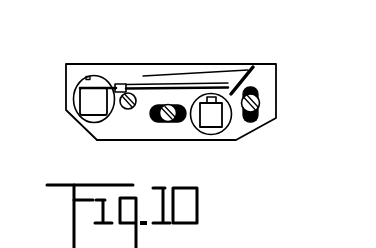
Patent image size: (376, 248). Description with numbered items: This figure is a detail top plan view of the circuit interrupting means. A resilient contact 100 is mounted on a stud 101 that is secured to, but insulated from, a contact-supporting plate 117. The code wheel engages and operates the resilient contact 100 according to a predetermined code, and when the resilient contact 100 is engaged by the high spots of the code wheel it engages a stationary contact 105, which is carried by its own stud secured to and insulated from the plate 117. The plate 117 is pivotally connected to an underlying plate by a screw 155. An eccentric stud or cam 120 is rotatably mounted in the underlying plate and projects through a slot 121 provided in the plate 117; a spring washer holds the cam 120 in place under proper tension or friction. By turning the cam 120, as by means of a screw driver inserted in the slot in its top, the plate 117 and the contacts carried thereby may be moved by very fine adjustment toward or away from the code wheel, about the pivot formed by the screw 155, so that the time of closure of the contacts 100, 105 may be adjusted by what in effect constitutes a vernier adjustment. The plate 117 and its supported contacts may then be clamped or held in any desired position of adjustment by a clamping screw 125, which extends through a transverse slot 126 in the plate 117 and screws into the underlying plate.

The resilient contact 100 is at (153, 83).
The stud 101 is at (93, 102).
The stationary contact 105 is at (210, 107).
The contact-supporting plate 117 is at (183, 75).
The eccentric stud or cam 120 is at (167, 119).
The slot 121 is at (177, 122).
The clamping screw 125 is at (259, 103).
The transverse slot 126 is at (259, 124).
The screw 155 is at (130, 109).